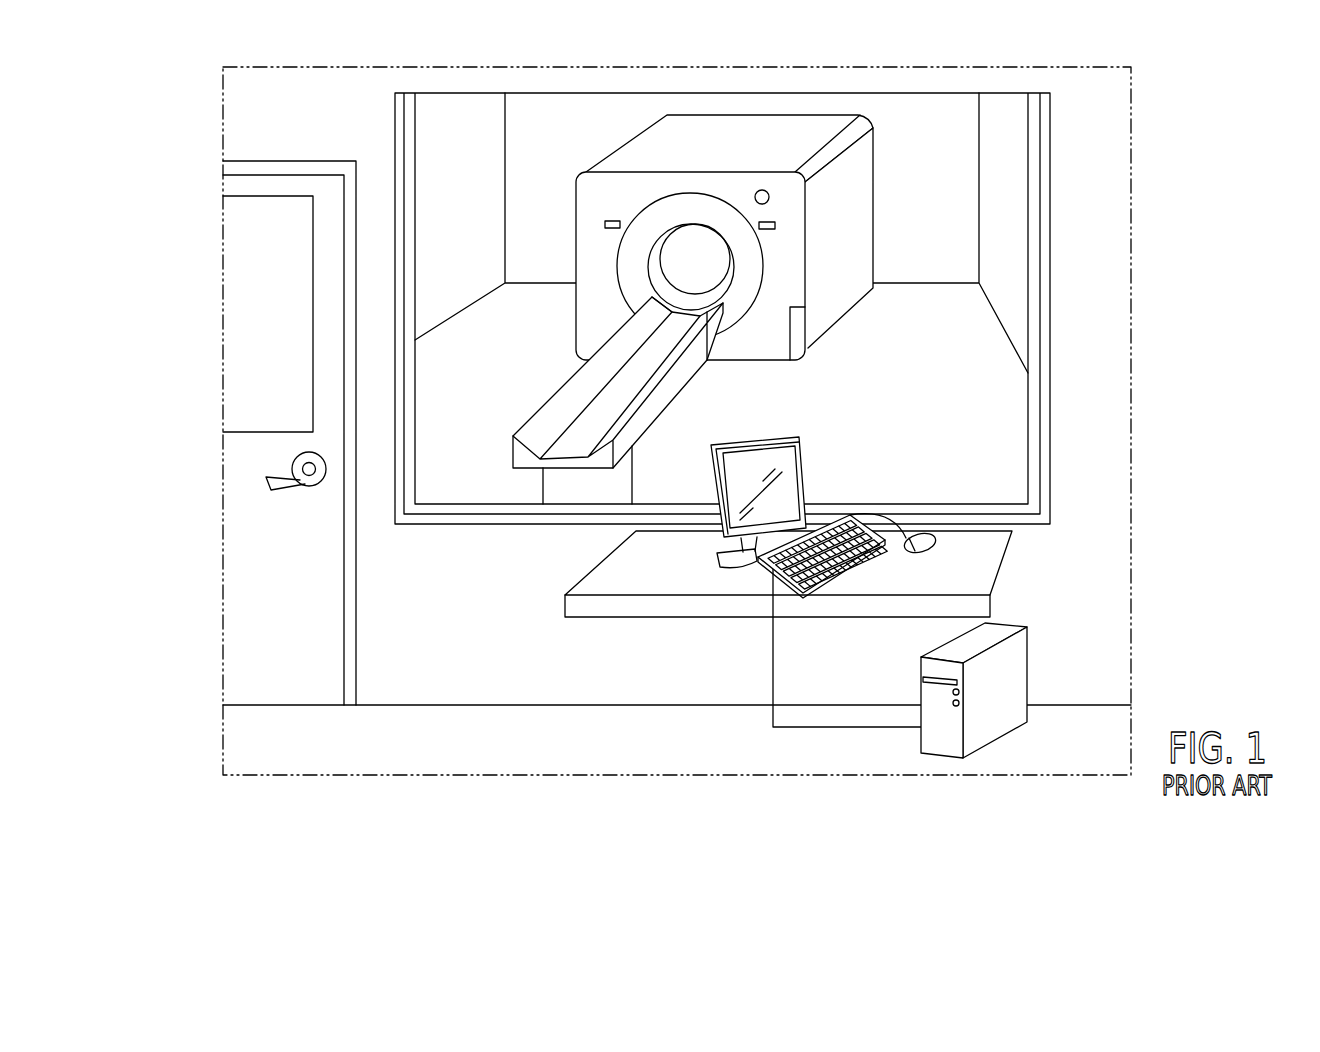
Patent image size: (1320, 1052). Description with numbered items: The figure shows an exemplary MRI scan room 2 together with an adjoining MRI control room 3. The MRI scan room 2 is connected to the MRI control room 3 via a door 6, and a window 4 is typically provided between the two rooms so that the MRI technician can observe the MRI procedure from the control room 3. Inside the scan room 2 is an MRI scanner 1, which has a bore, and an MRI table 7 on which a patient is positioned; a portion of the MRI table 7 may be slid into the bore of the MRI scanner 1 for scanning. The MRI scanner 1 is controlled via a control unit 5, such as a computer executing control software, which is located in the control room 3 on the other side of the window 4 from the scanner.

The MRI scanner 1 is at (852, 290).
The MRI scan room 2 is at (921, 143).
The MRI control room 3 is at (455, 728).
The window 4 is at (463, 116).
The control unit 5 is at (1010, 667).
The door 6 is at (245, 544).
The MRI table 7 is at (688, 408).